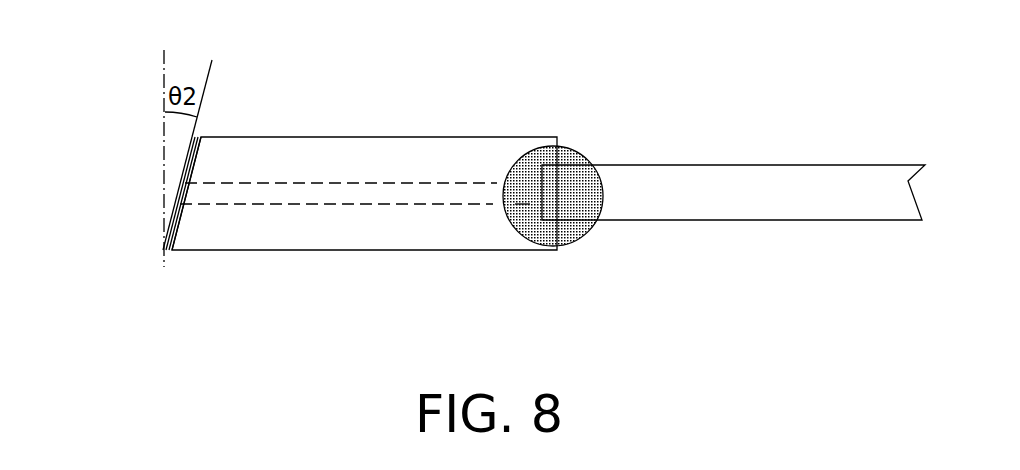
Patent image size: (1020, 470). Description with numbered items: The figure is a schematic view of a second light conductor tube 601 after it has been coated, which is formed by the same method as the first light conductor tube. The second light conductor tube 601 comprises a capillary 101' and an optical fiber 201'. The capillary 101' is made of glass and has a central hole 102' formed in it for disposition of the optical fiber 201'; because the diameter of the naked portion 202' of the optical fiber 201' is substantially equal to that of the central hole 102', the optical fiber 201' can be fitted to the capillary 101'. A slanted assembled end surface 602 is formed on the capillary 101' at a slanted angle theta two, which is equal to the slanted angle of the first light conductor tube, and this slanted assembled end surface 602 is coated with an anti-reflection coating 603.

The capillary 101' is at (364, 150).
The central hole 102' is at (341, 126).
The optical fiber 201' is at (733, 145).
The naked portion 202' is at (355, 261).
The second light conductor tube 601 is at (589, 116).
The slanted assembled end surface 602 is at (172, 232).
The anti-reflection coating 603 is at (180, 180).